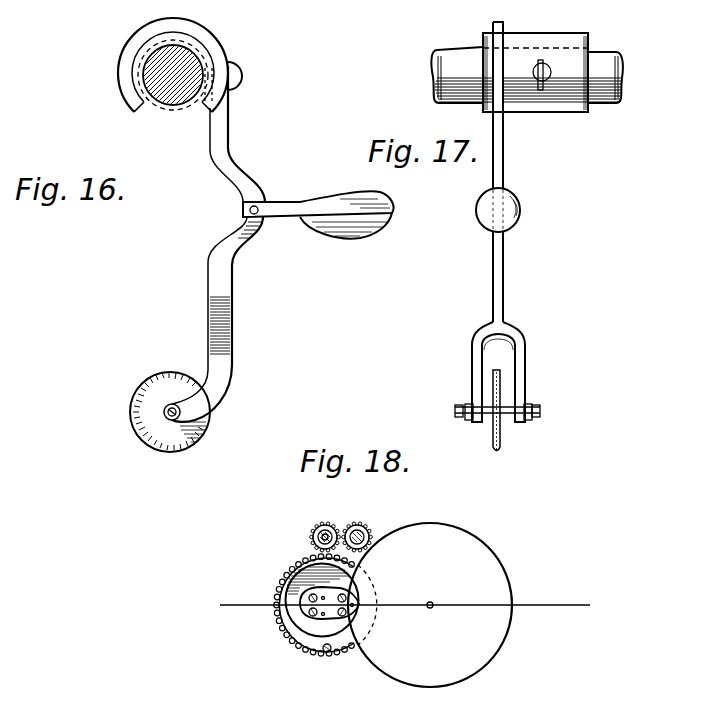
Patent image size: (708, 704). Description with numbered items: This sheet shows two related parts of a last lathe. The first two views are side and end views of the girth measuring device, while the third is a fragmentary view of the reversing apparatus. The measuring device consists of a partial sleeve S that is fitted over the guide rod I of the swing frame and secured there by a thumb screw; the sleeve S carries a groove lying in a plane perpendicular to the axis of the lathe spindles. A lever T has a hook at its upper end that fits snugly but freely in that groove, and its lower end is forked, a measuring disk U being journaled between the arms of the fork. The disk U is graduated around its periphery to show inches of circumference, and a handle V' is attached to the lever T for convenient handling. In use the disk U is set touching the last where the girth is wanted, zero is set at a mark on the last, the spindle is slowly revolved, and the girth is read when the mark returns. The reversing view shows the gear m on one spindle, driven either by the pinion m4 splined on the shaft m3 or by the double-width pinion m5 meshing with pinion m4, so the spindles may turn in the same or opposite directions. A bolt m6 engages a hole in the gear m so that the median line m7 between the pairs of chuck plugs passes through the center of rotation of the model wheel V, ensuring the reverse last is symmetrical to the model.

In FIG. 16, the guide rod I is at (186, 55).
In FIG. 17, the guide rod I is at (446, 62).
In FIG. 16, the partial sleeve S is at (240, 58).
In FIG. 17, the partial sleeve S is at (586, 42).
In FIG. 16, the lever T is at (233, 300).
In FIG. 17, the lever T is at (504, 286).
In FIG. 16, the measuring disk U is at (160, 374).
In FIG. 17, the measuring disk U is at (500, 378).
In FIG. 17, the model wheel V is at (511, 210).
In FIG. 16, the handle V' is at (318, 202).
In FIG. 18, the gear m is at (278, 620).
In FIG. 18, the shaft m3 is at (325, 528).
In FIG. 18, the pinion m4 is at (308, 540).
In FIG. 18, the double-width pinion m5 is at (370, 528).
In FIG. 18, the bolt m6 is at (326, 653).
In FIG. 18, the median line m7 is at (405, 605).